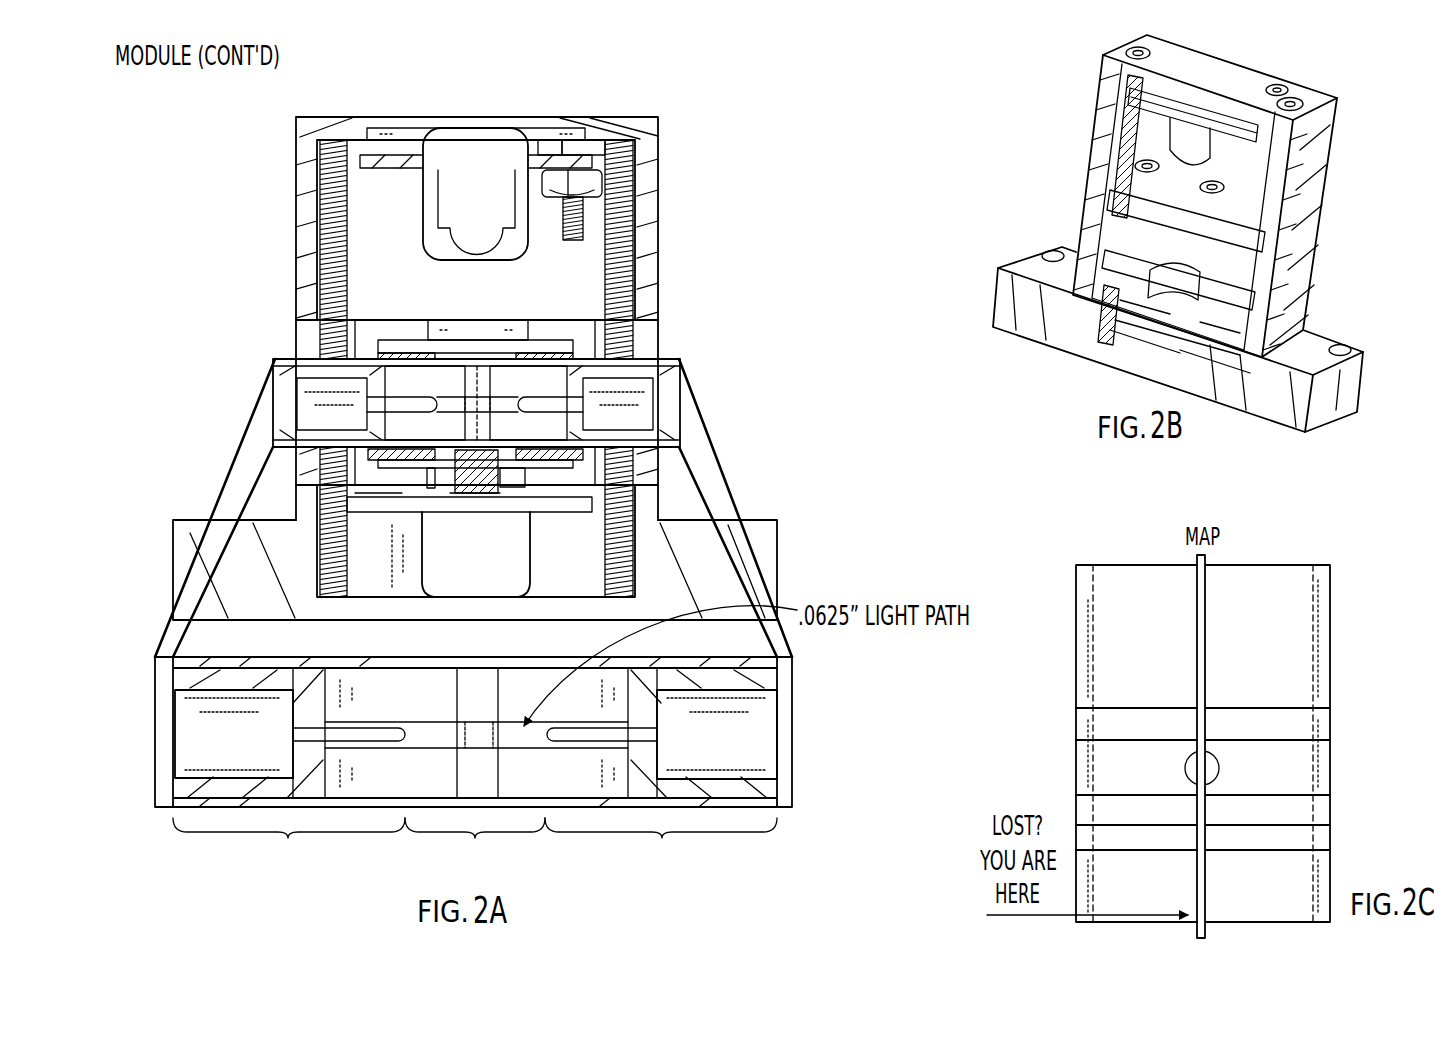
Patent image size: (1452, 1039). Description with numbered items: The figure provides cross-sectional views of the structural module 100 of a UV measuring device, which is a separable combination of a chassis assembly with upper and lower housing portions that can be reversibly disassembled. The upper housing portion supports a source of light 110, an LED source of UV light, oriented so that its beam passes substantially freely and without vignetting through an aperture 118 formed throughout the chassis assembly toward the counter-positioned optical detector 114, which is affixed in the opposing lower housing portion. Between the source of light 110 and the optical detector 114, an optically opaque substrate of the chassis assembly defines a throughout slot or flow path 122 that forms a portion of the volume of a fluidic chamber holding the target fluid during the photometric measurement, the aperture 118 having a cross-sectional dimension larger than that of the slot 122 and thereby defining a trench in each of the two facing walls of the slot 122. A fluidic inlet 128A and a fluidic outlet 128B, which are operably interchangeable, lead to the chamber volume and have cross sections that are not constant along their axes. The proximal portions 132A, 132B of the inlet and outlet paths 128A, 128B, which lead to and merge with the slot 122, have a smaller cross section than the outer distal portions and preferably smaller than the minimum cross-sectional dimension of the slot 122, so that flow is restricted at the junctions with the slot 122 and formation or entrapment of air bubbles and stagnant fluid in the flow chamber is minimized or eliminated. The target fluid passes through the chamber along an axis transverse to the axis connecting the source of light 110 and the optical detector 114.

In FIG. 2A, the structural module 100 is at (537, 92).
In FIG. 2B, the structural module 100 is at (1336, 80).
In FIG. 2A, the source of light 110 is at (658, 157).
In FIG. 2A, the optical detector 114 is at (512, 487).
In FIG. 2A, the aperture 118 is at (477, 405).
In FIG. 2A, the slot/flow path 122 is at (502, 390).
In FIG. 2A, the fluidic inlet 128A is at (313, 413).
In FIG. 2A, the fluidic outlet 128B is at (643, 400).
In FIG. 2A, the proximal portion of inlet path 132A is at (310, 738).
In FIG. 2A, the proximal portion of outlet path 132B is at (635, 737).